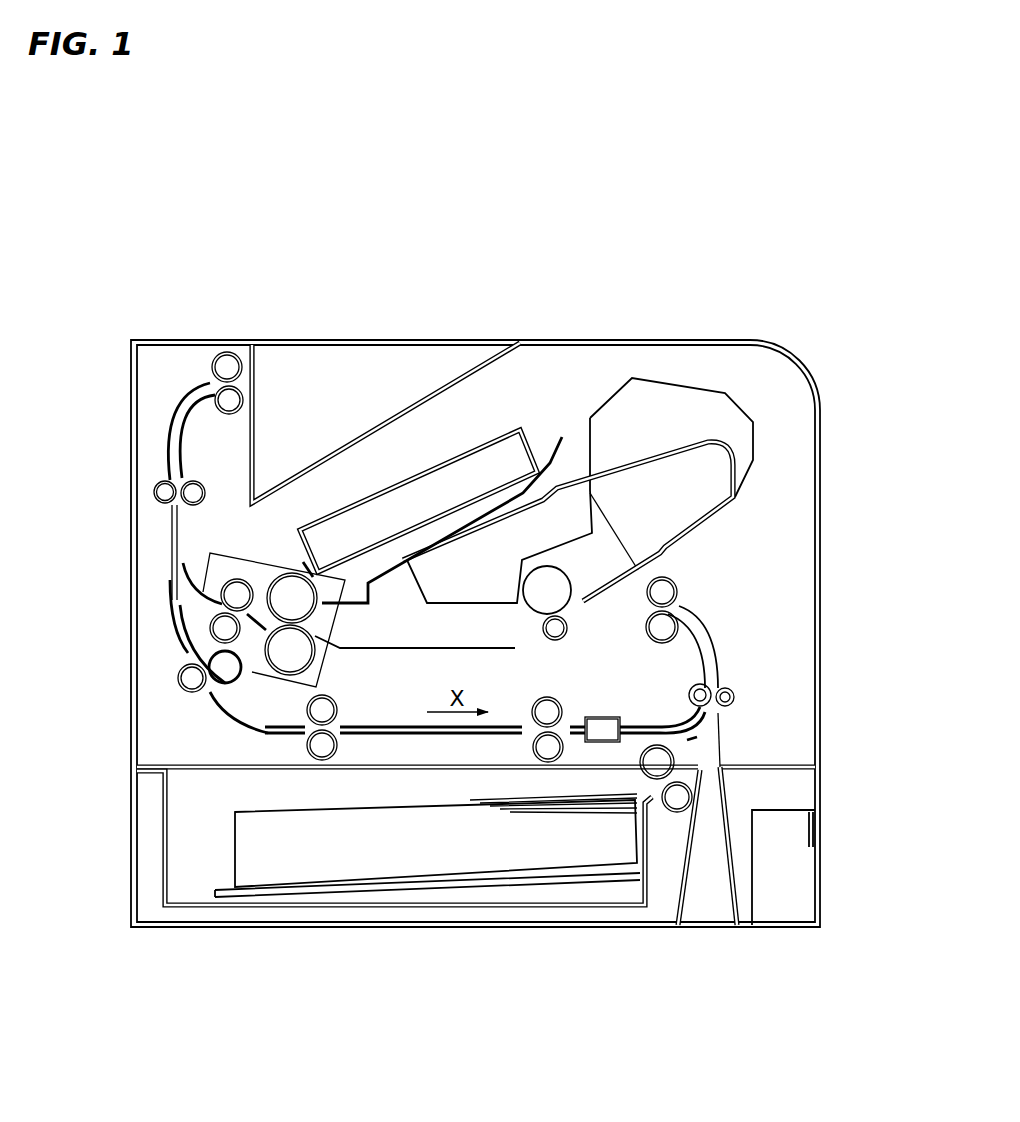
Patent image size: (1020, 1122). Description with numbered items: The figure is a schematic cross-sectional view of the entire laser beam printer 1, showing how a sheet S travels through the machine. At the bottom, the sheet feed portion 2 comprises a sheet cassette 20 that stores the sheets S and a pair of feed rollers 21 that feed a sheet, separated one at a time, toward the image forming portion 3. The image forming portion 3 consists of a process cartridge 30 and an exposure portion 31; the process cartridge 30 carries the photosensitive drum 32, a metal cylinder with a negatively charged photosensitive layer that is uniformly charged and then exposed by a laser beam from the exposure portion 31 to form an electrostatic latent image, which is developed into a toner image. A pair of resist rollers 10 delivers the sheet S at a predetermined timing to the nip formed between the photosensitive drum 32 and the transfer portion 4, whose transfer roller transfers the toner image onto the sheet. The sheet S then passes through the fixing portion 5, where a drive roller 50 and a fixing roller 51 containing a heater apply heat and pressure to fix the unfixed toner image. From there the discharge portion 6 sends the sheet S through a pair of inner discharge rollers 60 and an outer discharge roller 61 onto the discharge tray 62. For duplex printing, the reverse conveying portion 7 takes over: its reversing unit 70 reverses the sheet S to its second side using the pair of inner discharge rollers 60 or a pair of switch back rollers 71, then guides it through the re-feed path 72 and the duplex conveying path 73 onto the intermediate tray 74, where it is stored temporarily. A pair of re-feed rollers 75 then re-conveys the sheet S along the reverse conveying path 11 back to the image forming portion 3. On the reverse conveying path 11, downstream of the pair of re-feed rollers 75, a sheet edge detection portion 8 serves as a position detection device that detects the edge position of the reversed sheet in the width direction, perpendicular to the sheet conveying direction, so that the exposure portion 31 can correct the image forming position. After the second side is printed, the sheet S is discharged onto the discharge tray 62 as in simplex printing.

The laser beam printer 1 is at (803, 341).
The sheet feed portion 2 is at (662, 855).
The image forming portion 3 is at (617, 378).
The transfer portion 4 is at (555, 628).
The fixing portion 5 is at (252, 678).
The discharge portion 6 is at (158, 417).
The reverse conveying portion 7 is at (255, 743).
The sheet edge detection portion 8 is at (613, 717).
The pair of resist rollers 10 is at (662, 592).
The reverse conveying path 11 is at (700, 730).
The sheet cassette 20 is at (643, 877).
The pair of feed rollers 21 is at (660, 763).
The process cartridge 30 is at (670, 480).
The exposure portion 31 is at (404, 478).
The photosensitive drum 32 is at (547, 590).
The drive roller 50 is at (288, 650).
The fixing roller 51 is at (292, 598).
The pair of inner discharge rollers 60 is at (165, 492).
The outer discharge roller 61 is at (227, 367).
The discharge tray 62 is at (340, 408).
The reversing unit 70 is at (349, 688).
The pair of switch back rollers 71 is at (192, 678).
The re-feed path 72 is at (172, 588).
The duplex conveying path 73 is at (270, 728).
The intermediate tray 74 is at (430, 735).
The pair of re-feed rollers 75 is at (548, 748).
The sheet S is at (558, 842).